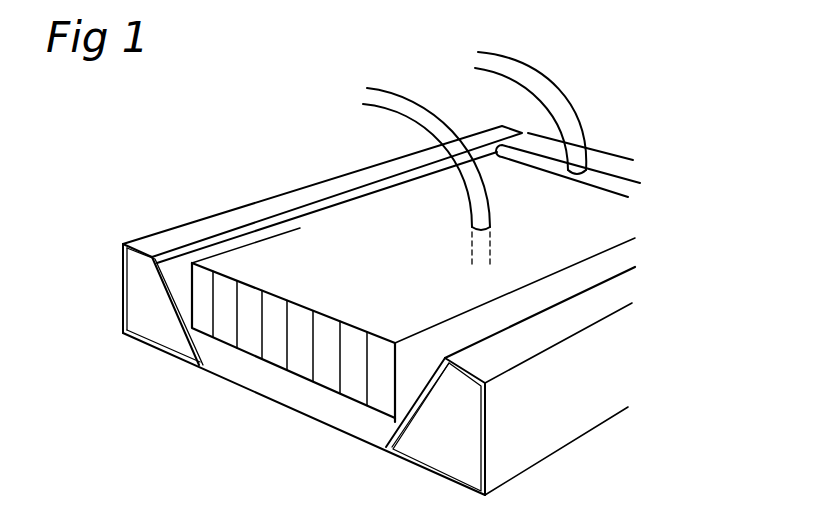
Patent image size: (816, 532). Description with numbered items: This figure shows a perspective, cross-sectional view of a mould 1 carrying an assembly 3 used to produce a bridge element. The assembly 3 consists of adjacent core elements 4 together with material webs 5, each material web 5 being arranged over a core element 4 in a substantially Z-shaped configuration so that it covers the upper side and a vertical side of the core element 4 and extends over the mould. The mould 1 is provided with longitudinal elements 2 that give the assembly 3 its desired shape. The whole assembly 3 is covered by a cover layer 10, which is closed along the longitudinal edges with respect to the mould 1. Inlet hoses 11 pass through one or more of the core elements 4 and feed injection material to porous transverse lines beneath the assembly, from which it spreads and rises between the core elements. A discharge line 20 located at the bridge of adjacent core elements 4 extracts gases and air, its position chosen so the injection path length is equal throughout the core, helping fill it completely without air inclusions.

The mould 1 is at (342, 413).
The longitudinal elements 2 is at (157, 321).
The assembly 3 is at (214, 271).
The core elements 4 is at (272, 352).
The material webs 5 is at (261, 287).
The cover layer 10 is at (605, 155).
The inlet hoses 11 is at (398, 98).
The discharge line 20 is at (634, 185).